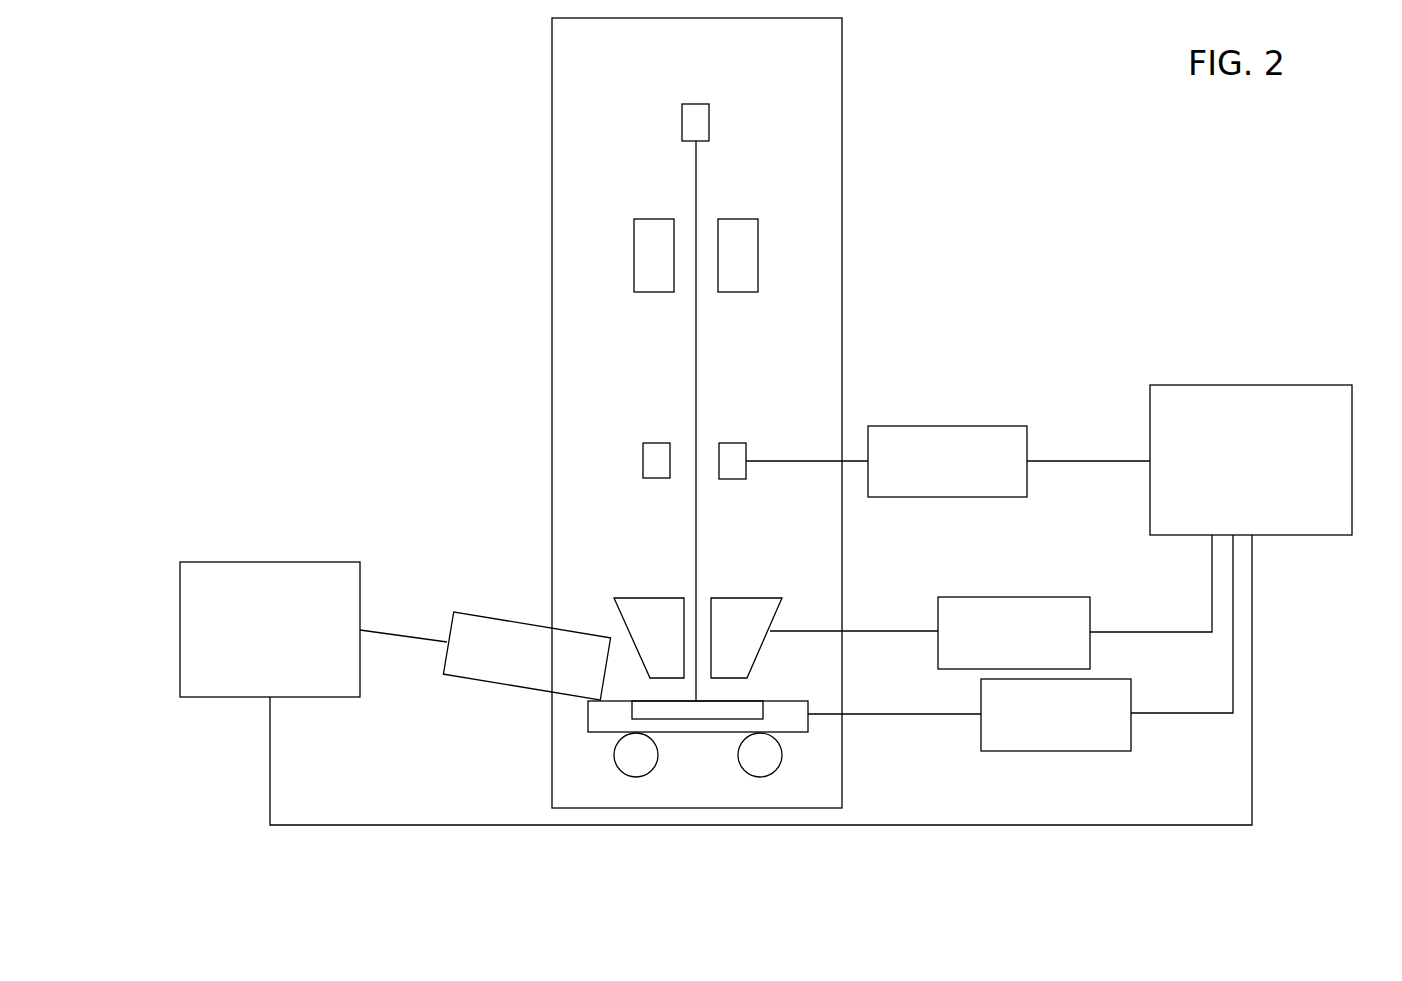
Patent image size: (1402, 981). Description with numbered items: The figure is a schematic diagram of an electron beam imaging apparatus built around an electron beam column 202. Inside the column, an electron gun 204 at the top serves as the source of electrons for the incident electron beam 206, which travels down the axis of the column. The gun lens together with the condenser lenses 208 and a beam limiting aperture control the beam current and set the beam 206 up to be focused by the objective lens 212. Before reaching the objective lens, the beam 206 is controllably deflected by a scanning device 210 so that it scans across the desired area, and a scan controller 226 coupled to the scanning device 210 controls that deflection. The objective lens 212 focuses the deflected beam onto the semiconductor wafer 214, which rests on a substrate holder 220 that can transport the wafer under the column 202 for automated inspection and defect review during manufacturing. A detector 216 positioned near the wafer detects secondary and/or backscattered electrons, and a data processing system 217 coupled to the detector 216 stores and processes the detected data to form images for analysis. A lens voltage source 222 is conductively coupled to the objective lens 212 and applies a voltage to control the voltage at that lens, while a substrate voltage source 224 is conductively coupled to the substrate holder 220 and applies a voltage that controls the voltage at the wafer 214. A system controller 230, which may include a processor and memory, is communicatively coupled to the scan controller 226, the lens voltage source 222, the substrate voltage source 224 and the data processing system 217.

The electron beam column 202 is at (795, 149).
The electron gun 204 is at (692, 123).
The incident electron beam 206 is at (696, 161).
The condenser lenses 208 is at (745, 265).
The scanning device 210 is at (657, 460).
The objective lens 212 is at (657, 638).
The semiconductor wafer 214 is at (652, 710).
The detector 216 is at (485, 656).
The data processing system 217 is at (716, 680).
The substrate holder 220 is at (789, 715).
The lens voltage source 222 is at (991, 602).
The substrate voltage source 224 is at (1020, 643).
The scan controller 226 is at (948, 461).
The system controller 230 is at (1251, 460).